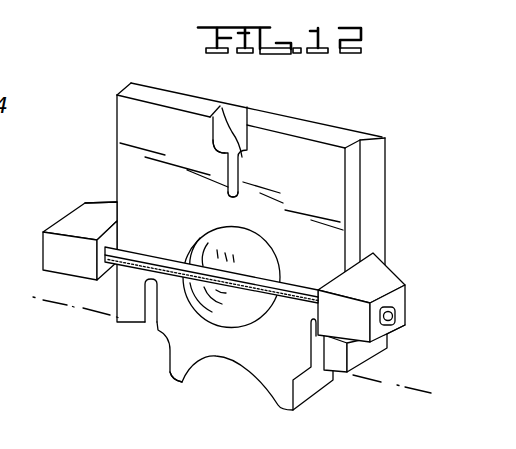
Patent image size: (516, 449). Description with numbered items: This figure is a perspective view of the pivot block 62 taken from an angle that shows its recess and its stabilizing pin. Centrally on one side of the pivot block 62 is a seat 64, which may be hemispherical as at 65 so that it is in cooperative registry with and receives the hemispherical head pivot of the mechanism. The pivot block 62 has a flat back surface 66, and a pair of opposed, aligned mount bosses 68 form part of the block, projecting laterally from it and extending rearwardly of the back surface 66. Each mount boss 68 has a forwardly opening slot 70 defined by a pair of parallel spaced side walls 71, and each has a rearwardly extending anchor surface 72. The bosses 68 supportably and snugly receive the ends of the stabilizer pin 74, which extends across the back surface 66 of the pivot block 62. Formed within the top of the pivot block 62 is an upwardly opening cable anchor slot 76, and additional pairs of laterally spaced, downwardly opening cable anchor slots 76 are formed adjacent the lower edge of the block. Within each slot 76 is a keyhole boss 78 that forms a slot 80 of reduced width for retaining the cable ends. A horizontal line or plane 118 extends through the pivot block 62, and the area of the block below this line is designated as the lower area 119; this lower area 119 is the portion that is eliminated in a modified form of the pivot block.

The pivot block 62 is at (362, 129).
The seat 64 is at (257, 257).
The hemispherical portion of seat 65 is at (251, 318).
The flat back surface 66 is at (326, 182).
The mount bosses 68 is at (72, 211).
The forwardly opening slot 70 is at (403, 302).
The side walls 71 is at (101, 202).
The anchor surfaces 72 is at (368, 342).
The stabilizer pin 74 is at (163, 257).
The cable anchor slots 76 is at (252, 120).
The keyhole boss 78 is at (227, 167).
The slot of reduced width 80 is at (230, 190).
The horizontal line or plane 118 is at (385, 382).
The lower area 119 is at (176, 374).